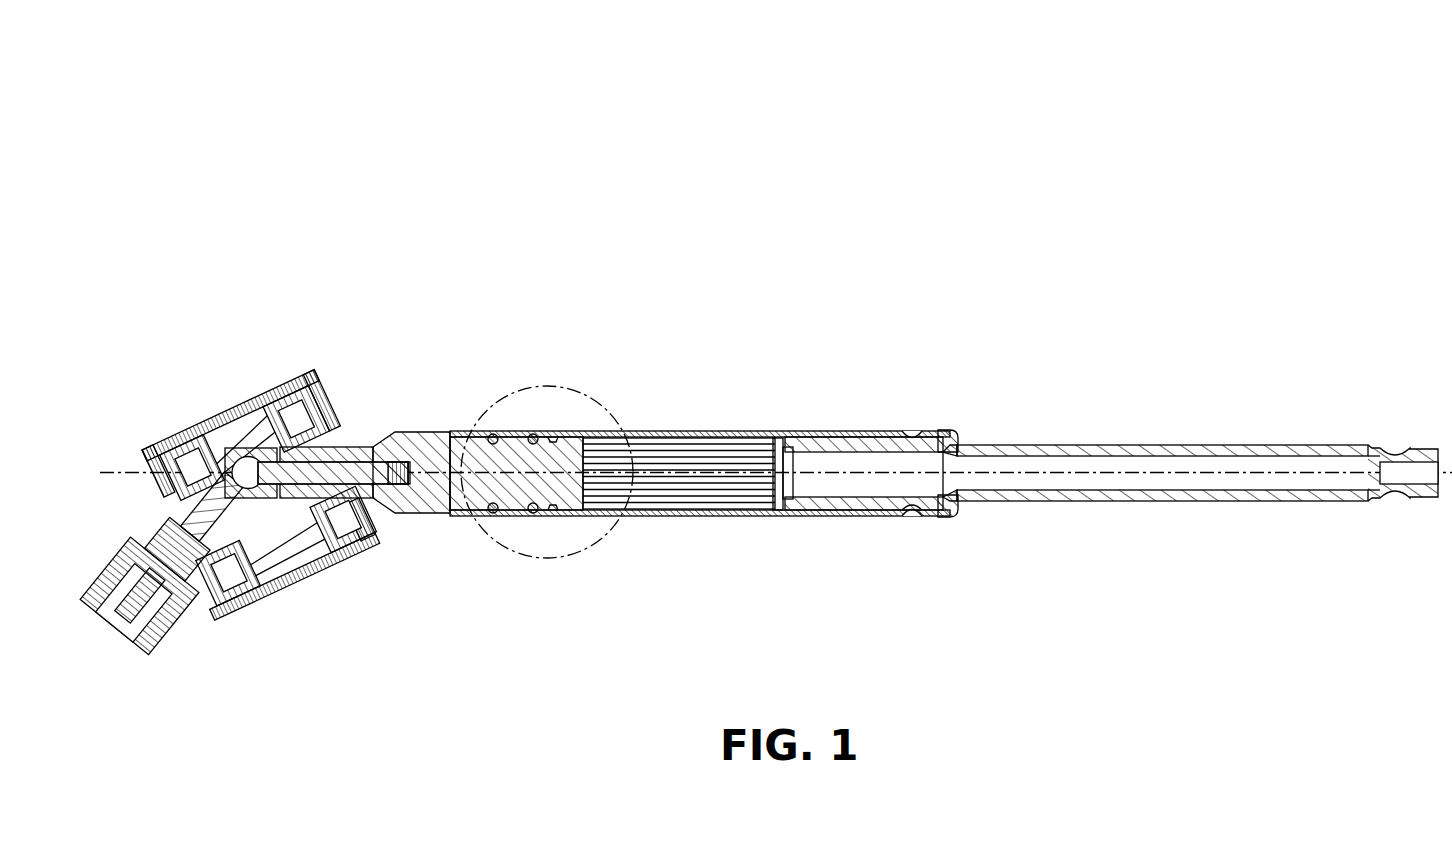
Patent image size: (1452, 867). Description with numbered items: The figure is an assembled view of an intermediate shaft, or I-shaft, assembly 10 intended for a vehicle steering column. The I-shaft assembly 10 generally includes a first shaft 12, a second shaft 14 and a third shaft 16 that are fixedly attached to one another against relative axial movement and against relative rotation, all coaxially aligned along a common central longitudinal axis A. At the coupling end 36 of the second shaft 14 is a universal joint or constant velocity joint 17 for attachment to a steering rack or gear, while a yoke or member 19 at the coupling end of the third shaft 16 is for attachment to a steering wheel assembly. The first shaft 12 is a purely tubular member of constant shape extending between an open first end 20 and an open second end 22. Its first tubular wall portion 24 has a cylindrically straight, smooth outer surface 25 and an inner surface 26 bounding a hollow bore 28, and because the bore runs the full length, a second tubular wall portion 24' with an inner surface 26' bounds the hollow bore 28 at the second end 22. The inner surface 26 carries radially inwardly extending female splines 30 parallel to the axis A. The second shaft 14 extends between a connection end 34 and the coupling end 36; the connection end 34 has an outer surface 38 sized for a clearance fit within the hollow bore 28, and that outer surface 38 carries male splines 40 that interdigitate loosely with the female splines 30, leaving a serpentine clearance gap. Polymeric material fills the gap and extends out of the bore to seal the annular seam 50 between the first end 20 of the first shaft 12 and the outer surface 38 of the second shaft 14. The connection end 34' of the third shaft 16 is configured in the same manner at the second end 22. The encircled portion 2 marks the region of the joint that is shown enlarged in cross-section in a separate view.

The I-shaft assembly 10 is at (881, 250).
The universal joint or constant velocity joint 17 is at (222, 368).
The coupling end 36 is at (283, 500).
The second shaft 14 is at (429, 424).
The first shaft 12 is at (709, 426).
The first end 20 is at (516, 423).
The first tubular wall portion 24 is at (516, 423).
The outer surface 38 is at (554, 375).
The male splines 40 is at (531, 425).
The inner surface 26 is at (531, 558).
The female splines 30 is at (520, 518).
The hollow bore 28 is at (465, 490).
The seam 50 is at (480, 520).
The connection end 34 is at (679, 496).
The connection end 34' is at (748, 506).
The second tubular wall portion 24' is at (864, 439).
The inner surface 26' is at (889, 547).
The outer surface 25 is at (791, 426).
The second end 22 is at (958, 436).
The third shaft 16 is at (1094, 438).
The central longitudinal axis A is at (1218, 475).
The yoke or member 19 is at (1395, 425).
The encircled portion 2 is at (618, 410).